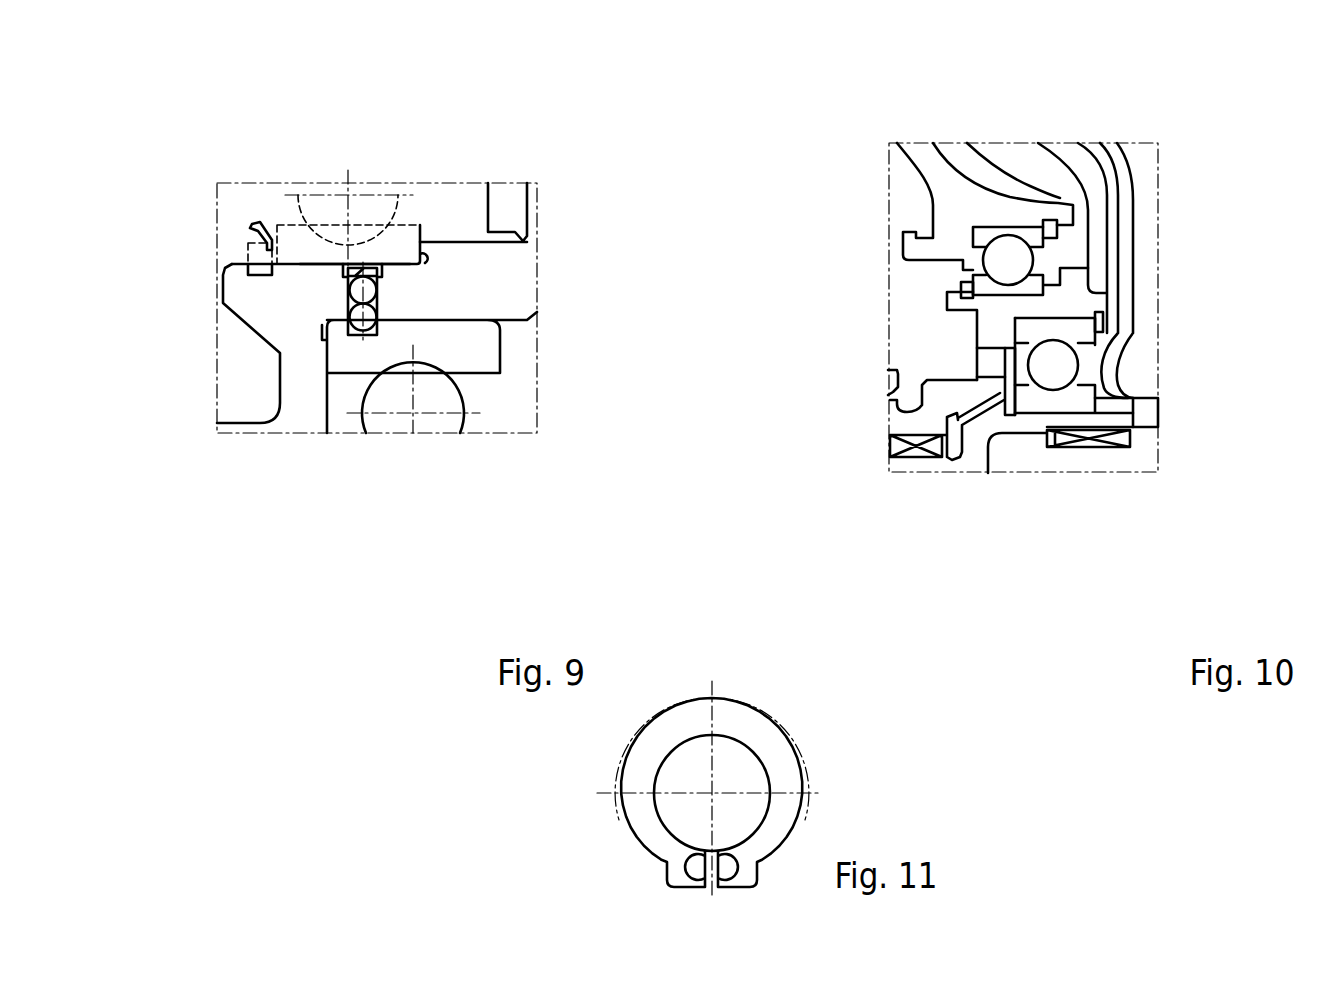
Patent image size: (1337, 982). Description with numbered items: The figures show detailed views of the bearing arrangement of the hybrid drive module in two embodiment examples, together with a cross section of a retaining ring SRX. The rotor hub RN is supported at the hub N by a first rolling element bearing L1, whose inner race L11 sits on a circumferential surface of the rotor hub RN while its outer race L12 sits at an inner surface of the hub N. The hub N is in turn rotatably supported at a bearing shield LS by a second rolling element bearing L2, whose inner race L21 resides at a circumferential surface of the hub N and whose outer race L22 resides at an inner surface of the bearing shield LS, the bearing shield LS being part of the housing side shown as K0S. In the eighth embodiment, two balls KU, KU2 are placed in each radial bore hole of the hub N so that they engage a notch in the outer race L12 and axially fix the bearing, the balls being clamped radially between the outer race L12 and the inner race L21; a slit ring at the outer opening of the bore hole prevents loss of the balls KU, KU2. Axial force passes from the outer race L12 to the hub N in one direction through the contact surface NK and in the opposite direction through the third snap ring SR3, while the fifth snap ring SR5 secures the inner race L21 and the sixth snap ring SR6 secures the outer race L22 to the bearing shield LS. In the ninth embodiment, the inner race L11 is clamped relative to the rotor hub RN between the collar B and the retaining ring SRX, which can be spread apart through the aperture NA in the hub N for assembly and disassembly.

In FIG. 9, the second rolling element bearing L2 is at (337, 172).
In FIG. 10, the second rolling element bearing L2 is at (1046, 259).
In FIG. 9, the inner race L21 is at (400, 248).
In FIG. 10, the inner race L21 is at (1032, 287).
In FIG. 10, the outer race L22 is at (983, 237).
In FIG. 9, the first rolling element bearing L1 is at (426, 440).
In FIG. 10, the first rolling element bearing L1 is at (1054, 412).
In FIG. 10, the inner race L11 is at (1080, 400).
In FIG. 9, the outer race L12 is at (474, 352).
In FIG. 10, the outer race L12 is at (1050, 330).
In FIG. 9, the fifth snap ring SR5 is at (262, 258).
In FIG. 10, the fifth snap ring SR5 is at (967, 287).
In FIG. 10, the sixth snap ring SR6 is at (1050, 228).
In FIG. 10, the third snap ring SR3 is at (1100, 322).
In FIG. 10, the retaining ring SRX is at (1005, 390).
In FIG. 11, the retaining ring SRX is at (808, 746).
In FIG. 9, the hub N is at (288, 312).
In FIG. 10, the hub N is at (928, 417).
In FIG. 10, the contact surface NK is at (1006, 333).
In FIG. 10, the aperture NA is at (992, 348).
In FIG. 9, the balls KU is at (370, 315).
In FIG. 9, the ball KU2 is at (370, 290).
In FIG. 10, the bearing shield LS is at (920, 155).
In FIG. 10, the housing shell K0S is at (1125, 215).
In FIG. 10, the collar B is at (1110, 399).
In FIG. 10, the rotor hub RN is at (978, 433).